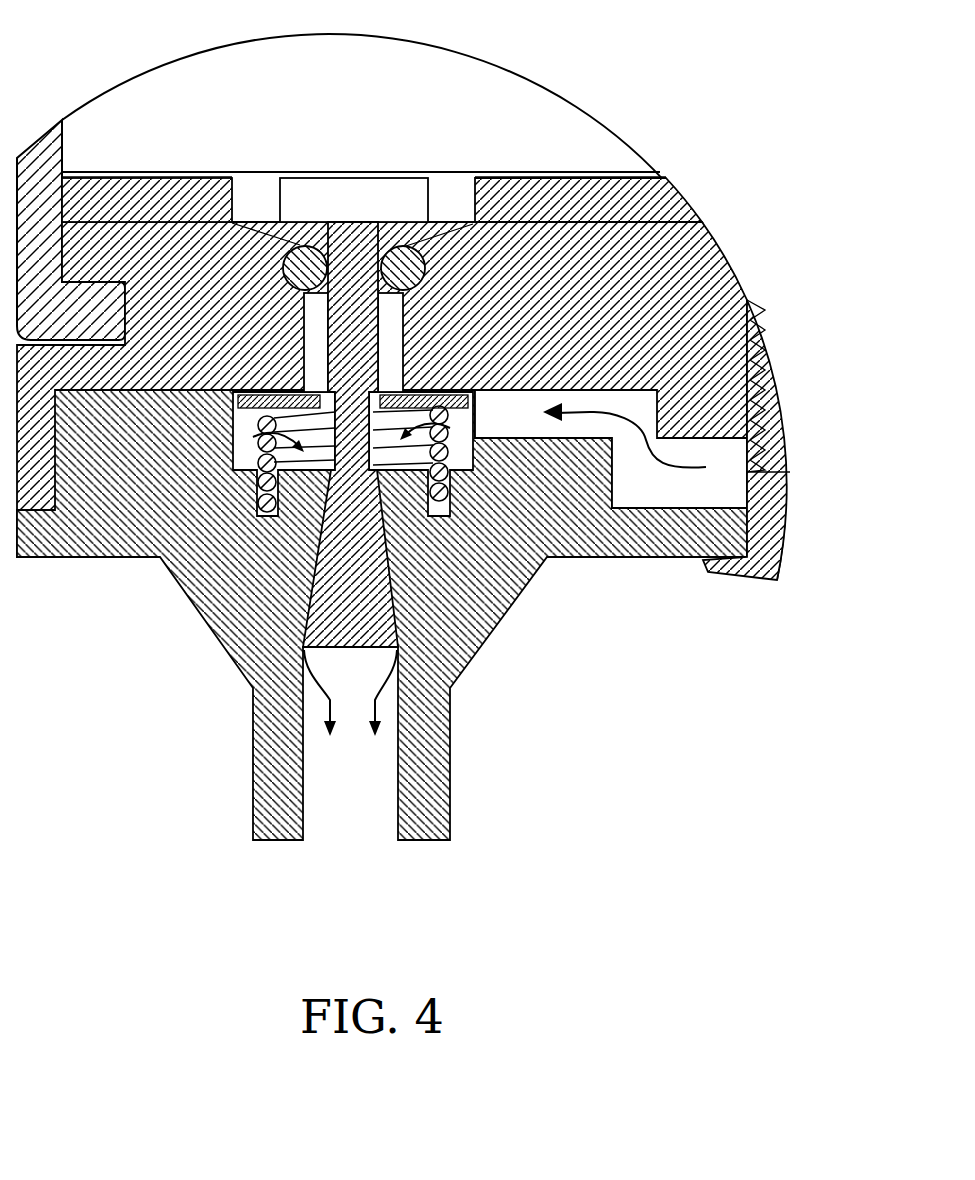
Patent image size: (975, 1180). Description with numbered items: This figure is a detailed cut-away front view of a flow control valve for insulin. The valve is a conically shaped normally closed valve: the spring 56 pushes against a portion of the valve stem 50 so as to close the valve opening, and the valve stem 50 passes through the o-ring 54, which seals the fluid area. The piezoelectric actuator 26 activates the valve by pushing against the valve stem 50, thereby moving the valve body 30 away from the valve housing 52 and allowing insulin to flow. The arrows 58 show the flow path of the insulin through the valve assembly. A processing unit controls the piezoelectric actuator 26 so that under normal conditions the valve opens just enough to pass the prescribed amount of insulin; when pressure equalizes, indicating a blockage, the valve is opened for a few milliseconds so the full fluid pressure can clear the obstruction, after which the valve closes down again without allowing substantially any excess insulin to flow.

The piezoelectric actuator 26 is at (415, 90).
The o-ring 54 is at (655, 172).
The valve stem 50 is at (713, 230).
The spring 56 is at (306, 466).
The valve housing 52 is at (270, 593).
The valve body 30 is at (312, 628).
The arrows 58 is at (383, 697).